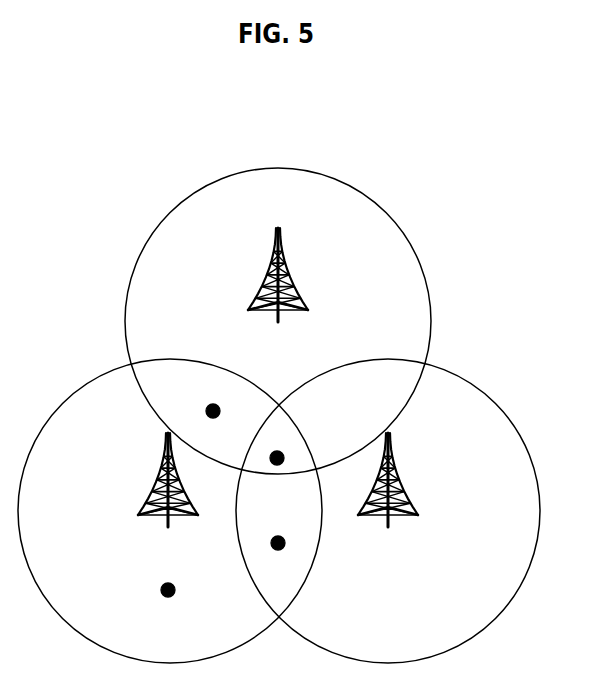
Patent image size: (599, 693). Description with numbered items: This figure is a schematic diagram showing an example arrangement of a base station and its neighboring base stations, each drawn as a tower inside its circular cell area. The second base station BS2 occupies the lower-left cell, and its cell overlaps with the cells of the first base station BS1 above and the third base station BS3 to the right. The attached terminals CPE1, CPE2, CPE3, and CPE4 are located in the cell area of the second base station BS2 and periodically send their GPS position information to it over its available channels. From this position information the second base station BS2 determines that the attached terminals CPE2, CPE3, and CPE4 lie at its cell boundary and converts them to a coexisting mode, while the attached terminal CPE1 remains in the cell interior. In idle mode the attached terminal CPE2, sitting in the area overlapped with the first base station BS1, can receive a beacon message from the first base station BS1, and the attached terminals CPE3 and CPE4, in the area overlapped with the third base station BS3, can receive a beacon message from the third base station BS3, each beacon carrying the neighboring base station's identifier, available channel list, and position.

The first base station BS1 is at (278, 321).
The second base station BS2 is at (170, 511).
The third base station BS3 is at (388, 511).
The attached terminal CPE1 is at (168, 605).
The attached terminal CPE2 is at (213, 424).
The attached terminal CPE3 is at (278, 476).
The attached terminal CPE4 is at (278, 558).